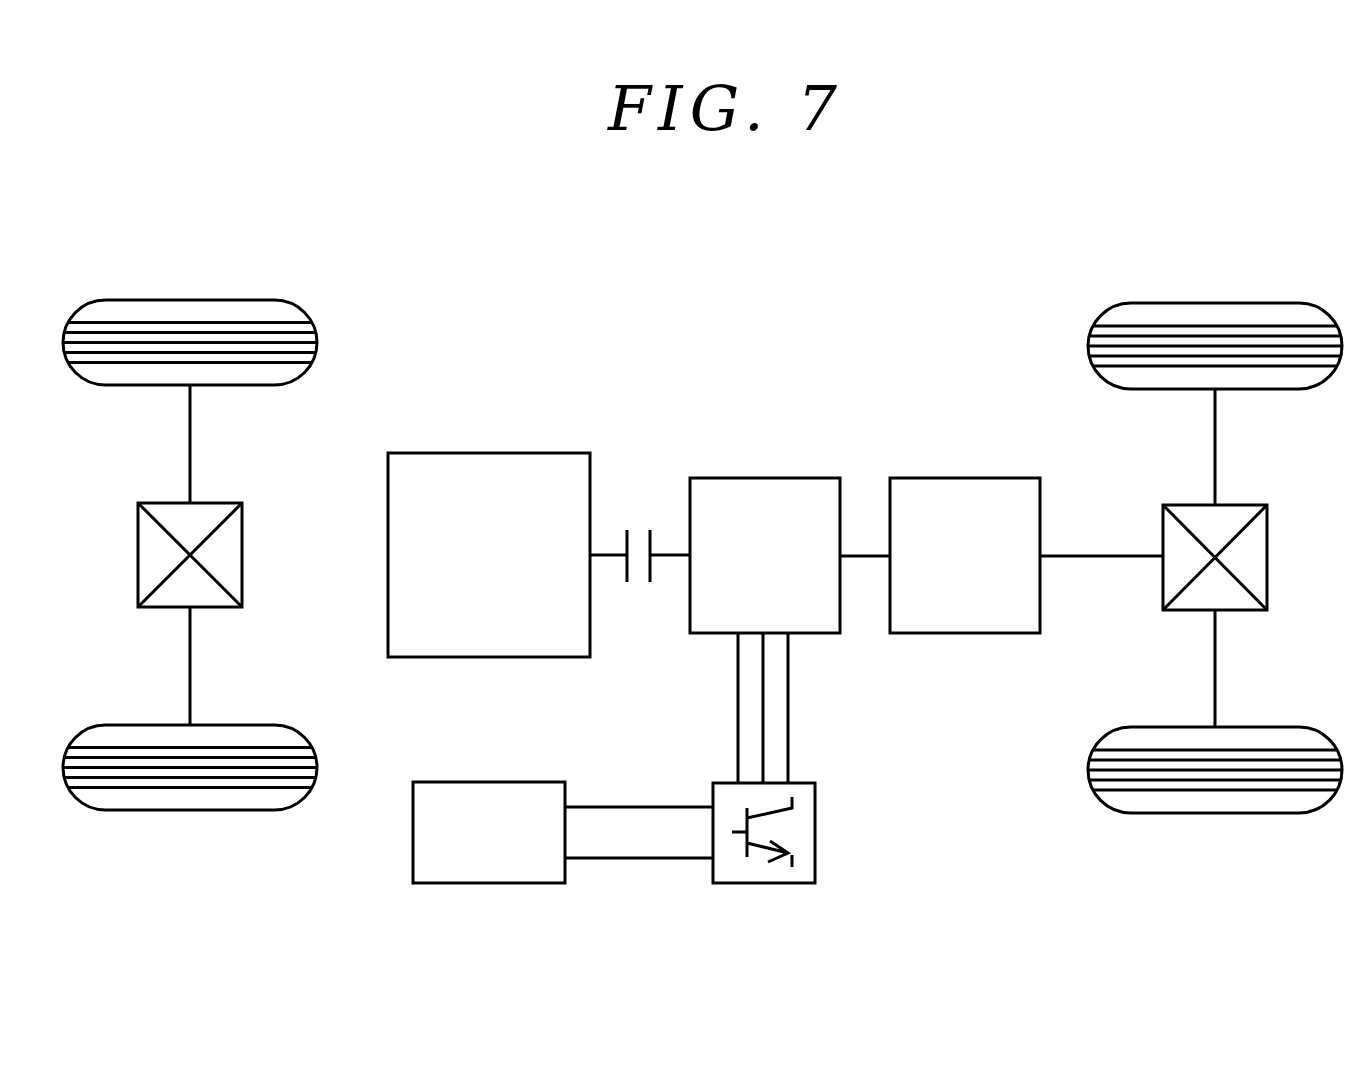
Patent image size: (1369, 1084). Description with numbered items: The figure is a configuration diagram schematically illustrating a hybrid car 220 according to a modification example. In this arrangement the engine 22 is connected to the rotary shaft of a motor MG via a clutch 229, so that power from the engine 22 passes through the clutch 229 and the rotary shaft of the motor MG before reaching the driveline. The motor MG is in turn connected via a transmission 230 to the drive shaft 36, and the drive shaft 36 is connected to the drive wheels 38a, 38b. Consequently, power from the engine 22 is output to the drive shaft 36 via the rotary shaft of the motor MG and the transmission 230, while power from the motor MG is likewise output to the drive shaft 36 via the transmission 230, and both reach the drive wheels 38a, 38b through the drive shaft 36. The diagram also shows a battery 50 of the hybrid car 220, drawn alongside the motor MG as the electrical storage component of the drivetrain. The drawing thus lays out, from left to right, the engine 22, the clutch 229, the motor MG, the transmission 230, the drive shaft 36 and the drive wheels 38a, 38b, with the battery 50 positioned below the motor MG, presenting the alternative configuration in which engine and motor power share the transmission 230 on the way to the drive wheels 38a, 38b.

The hybrid car 220 is at (977, 278).
The engine 22 is at (490, 452).
The clutch 229 is at (638, 532).
The motor MG is at (765, 477).
The transmission 230 is at (965, 477).
The drive shaft 36 is at (1090, 553).
The drive wheel 38a is at (1215, 301).
The drive wheel 38b is at (1213, 813).
The battery 50 is at (488, 781).